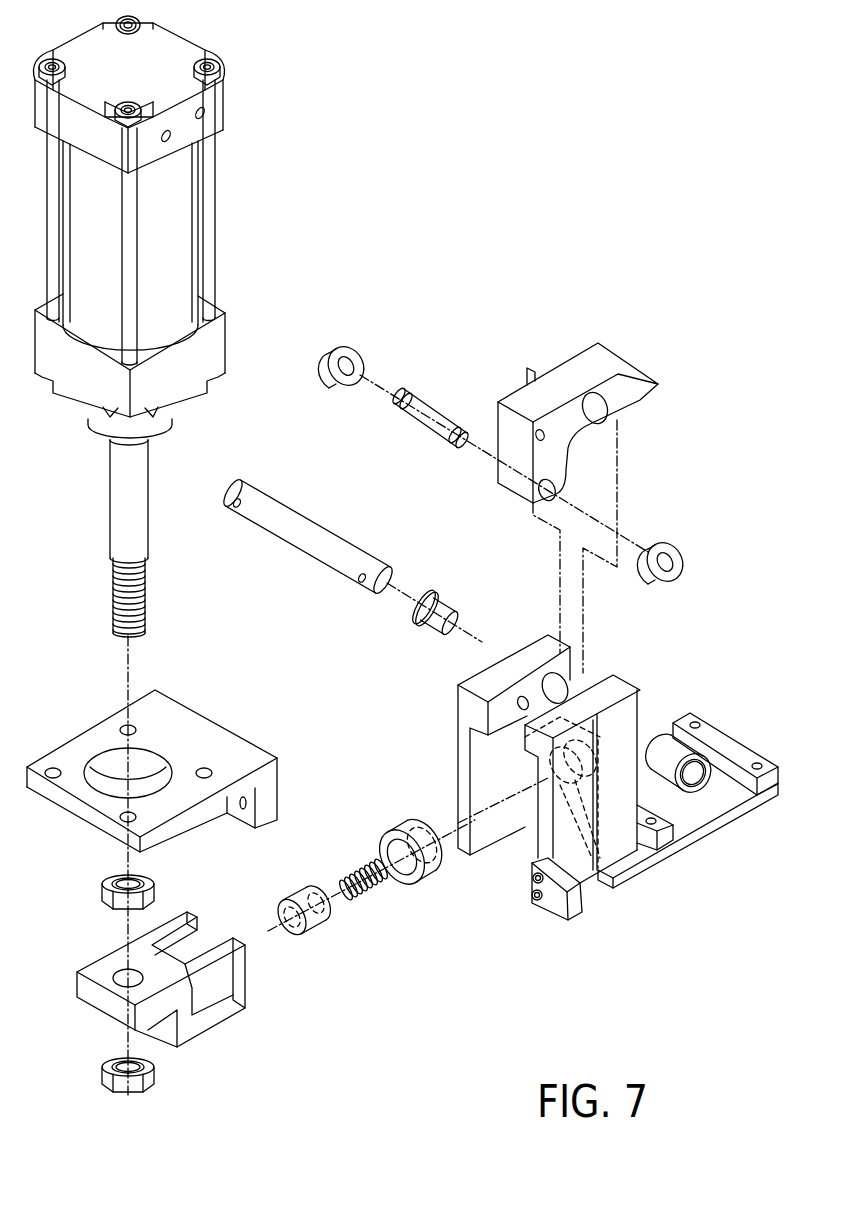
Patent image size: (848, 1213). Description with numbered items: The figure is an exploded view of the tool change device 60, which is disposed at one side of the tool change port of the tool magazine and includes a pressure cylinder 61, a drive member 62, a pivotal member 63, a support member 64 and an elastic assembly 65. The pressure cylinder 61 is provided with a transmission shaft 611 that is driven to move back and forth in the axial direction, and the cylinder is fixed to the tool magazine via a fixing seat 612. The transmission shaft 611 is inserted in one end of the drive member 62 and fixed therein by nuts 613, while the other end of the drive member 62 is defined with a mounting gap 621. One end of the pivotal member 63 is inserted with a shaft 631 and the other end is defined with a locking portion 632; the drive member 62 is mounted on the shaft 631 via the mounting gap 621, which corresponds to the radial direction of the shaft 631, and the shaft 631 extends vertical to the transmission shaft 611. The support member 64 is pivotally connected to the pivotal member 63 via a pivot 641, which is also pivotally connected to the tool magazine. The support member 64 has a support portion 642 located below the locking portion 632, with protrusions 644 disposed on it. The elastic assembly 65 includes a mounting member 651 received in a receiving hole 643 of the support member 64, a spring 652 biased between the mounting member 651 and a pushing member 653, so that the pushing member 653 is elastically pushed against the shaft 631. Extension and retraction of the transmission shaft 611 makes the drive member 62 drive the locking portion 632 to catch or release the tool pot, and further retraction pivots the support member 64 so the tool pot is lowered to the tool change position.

The tool change device 60 is at (470, 215).
The pressure cylinder 61 is at (231, 198).
The transmission shaft 611 is at (127, 533).
The fixing seat 612 is at (193, 740).
The nuts 613 is at (100, 893).
The drive member 62 is at (200, 945).
The mounting gap 621 is at (234, 978).
The pivotal member 63 is at (560, 352).
The shaft 631 is at (424, 414).
The locking portion 632 is at (637, 400).
The support member 64 is at (642, 667).
The pivot 641 is at (326, 545).
The support portion 642 is at (690, 800).
The receiving hole 643 is at (583, 853).
The protrusions 644 is at (735, 752).
The elastic assembly 65 is at (397, 920).
The mounting member 651 is at (438, 868).
The spring 652 is at (360, 862).
The pushing member 653 is at (320, 917).